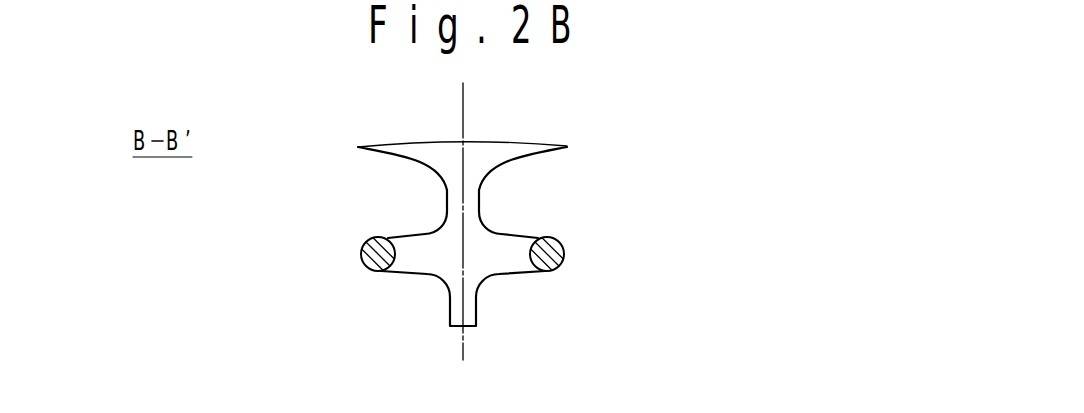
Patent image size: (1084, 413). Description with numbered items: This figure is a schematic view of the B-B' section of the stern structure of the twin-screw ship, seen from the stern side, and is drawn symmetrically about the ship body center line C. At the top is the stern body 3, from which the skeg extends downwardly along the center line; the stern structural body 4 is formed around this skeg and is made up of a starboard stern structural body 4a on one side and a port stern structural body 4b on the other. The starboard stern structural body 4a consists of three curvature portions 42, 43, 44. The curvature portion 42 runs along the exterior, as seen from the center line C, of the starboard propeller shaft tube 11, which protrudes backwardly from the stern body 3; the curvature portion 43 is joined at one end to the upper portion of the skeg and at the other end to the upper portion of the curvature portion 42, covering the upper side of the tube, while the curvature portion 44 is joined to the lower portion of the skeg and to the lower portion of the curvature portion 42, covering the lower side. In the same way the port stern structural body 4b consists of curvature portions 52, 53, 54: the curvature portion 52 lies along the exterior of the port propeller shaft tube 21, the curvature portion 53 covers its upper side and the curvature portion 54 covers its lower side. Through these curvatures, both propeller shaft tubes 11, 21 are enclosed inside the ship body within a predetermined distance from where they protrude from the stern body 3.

The ship body center line C is at (462, 110).
The stern body 3 is at (497, 150).
The stern structural body 4 is at (496, 258).
The starboard stern structural body 4a is at (582, 258).
The port stern structural body 4b is at (343, 258).
The starboard propeller shaft tube 11 is at (553, 271).
The port propeller shaft tube 21 is at (372, 271).
The curvature portion 42 is at (567, 252).
The curvature portion 43 is at (493, 221).
The curvature portion 44 is at (502, 277).
The curvature portion 52 is at (362, 250).
The curvature portion 53 is at (432, 221).
The curvature portion 54 is at (423, 276).